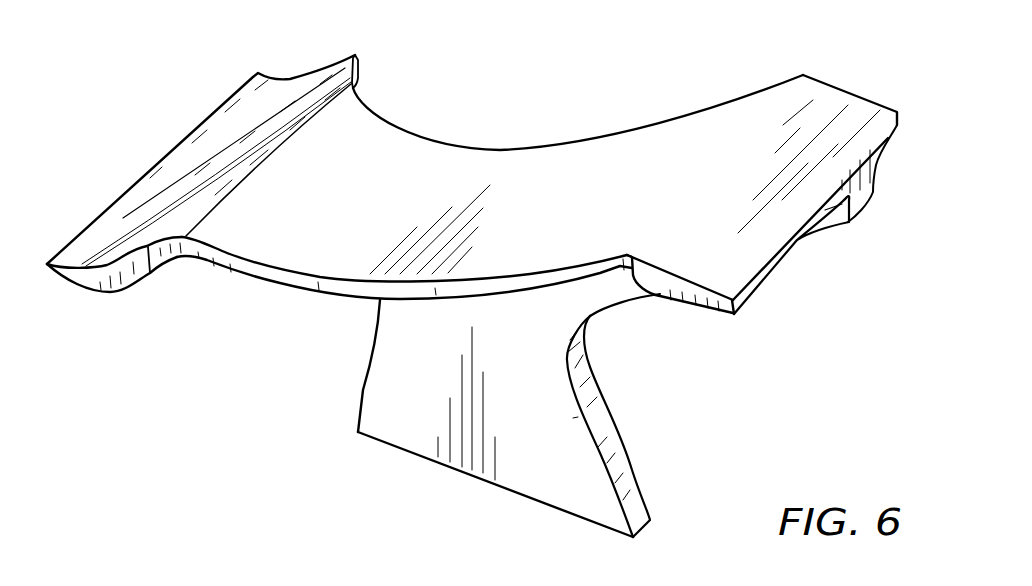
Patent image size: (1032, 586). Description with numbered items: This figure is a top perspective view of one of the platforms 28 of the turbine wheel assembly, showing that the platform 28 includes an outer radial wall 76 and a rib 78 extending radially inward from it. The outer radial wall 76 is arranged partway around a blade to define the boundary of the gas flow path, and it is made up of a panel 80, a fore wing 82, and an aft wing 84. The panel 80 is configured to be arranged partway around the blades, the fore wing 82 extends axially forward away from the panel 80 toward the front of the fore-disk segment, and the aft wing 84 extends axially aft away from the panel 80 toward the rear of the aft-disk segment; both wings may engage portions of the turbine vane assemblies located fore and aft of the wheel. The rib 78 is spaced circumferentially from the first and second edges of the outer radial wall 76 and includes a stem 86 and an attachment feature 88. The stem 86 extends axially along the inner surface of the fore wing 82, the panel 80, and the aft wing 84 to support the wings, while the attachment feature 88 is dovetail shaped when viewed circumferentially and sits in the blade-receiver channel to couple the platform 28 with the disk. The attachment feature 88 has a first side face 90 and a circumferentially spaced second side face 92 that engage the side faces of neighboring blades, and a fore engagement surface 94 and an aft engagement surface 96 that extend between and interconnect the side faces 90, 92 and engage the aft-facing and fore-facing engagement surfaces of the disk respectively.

The platform 28 is at (654, 37).
The outer radial wall 76 is at (107, 177).
The rib 78 is at (341, 387).
The panel 80 is at (501, 173).
The fore wing 82 is at (205, 94).
The aft wing 84 is at (860, 73).
The stem 86 is at (619, 308).
The attachment feature 88 is at (401, 431).
The first side face 90 is at (547, 487).
The second side face 92 is at (588, 412).
The fore engagement surface 94 is at (357, 417).
The aft engagement surface 96 is at (620, 458).